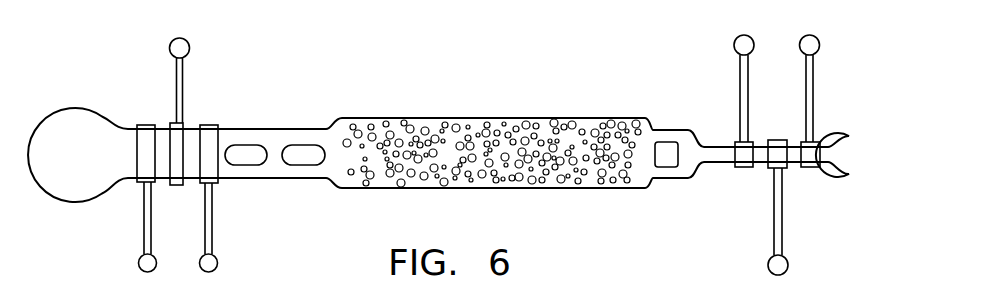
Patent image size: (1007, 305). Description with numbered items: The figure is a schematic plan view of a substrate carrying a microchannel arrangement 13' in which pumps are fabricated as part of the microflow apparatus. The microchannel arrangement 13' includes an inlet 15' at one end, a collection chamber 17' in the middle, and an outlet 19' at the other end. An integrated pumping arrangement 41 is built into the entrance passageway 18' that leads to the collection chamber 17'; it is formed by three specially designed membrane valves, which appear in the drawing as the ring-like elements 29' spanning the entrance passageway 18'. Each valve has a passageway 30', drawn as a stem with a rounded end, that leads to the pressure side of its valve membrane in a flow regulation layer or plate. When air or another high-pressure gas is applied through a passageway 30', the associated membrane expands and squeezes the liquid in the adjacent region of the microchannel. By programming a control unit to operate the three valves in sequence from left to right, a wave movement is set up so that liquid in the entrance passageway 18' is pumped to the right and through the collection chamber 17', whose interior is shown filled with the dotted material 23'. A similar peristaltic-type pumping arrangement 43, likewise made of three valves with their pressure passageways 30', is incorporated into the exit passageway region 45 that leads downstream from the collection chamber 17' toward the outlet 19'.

The microchannel arrangement 13' is at (493, 88).
The inlet 15' is at (65, 106).
The collection chamber 17' is at (489, 127).
The entrance passageway 18' is at (428, 169).
The outlet 19' is at (844, 130).
The pores 23' is at (492, 175).
The clamp rings 29' is at (172, 129).
The passageway 30' is at (166, 157).
The integrated pumping arrangement 41 is at (131, 59).
The peristaltic-type pumping arrangement 43 is at (769, 112).
The exit passageway region 45 is at (725, 163).